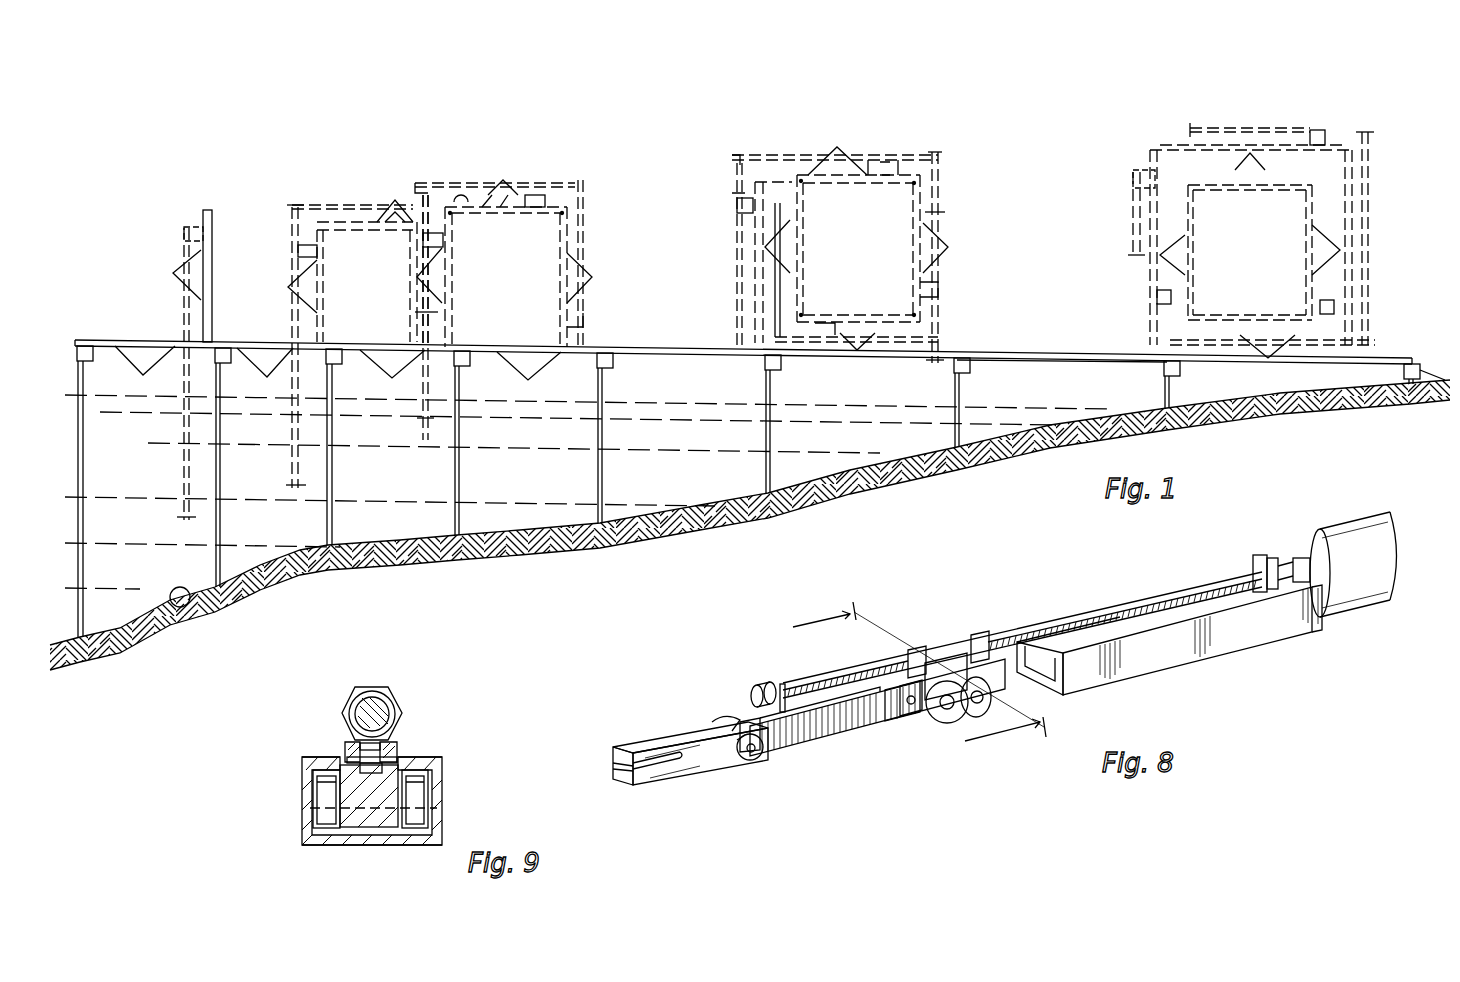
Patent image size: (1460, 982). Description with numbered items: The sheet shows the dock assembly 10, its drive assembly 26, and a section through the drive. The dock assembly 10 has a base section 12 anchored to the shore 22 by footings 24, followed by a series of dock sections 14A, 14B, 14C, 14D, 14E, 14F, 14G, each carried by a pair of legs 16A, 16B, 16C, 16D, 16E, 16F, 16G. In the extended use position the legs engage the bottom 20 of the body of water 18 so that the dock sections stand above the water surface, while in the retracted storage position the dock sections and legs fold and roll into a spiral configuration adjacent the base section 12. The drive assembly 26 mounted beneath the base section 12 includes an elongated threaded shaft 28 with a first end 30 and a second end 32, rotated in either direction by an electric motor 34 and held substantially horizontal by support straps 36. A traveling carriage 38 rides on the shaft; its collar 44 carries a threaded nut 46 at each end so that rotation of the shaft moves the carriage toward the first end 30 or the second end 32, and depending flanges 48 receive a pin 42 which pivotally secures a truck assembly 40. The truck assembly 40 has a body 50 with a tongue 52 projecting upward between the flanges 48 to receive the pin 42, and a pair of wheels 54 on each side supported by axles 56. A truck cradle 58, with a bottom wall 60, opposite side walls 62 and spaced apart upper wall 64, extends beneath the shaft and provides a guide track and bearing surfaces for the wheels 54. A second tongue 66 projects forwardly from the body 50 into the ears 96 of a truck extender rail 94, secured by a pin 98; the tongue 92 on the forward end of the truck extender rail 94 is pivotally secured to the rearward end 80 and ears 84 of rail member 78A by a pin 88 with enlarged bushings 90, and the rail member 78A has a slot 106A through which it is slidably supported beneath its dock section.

In FIG. 1, the dock assembly 10 is at (992, 218).
In FIG. 1, the base section 12 is at (1390, 362).
In FIG. 1, the dock section 14A is at (1155, 332).
In FIG. 1, the dock section 14B is at (1285, 150).
In FIG. 1, the dock section 14C is at (640, 355).
In FIG. 1, the dock section 14D is at (912, 165).
In FIG. 1, the dock section 14E is at (425, 332).
In FIG. 1, the dock section 14F is at (500, 208).
In FIG. 1, the dock section 14G is at (392, 208).
In FIG. 1, the legs 16A is at (962, 375).
In FIG. 1, the legs 16B is at (772, 440).
In FIG. 1, the legs 16C is at (604, 470).
In FIG. 1, the legs 16D is at (460, 470).
In FIG. 1, the legs 16E is at (425, 460).
In FIG. 1, the legs 16F is at (296, 470).
In FIG. 1, the legs 16G is at (182, 470).
In FIG. 1, the body of water 18 is at (150, 583).
In FIG. 1, the bottom 20 is at (210, 605).
In FIG. 1, the shore 22 is at (1418, 392).
In FIG. 1, the footings 24 is at (1165, 378).
In FIG. 8, the drive assembly 26 is at (962, 578).
In FIG. 9, the threaded shaft 28 is at (390, 712).
In FIG. 8, the threaded shaft 28 is at (1100, 602).
In FIG. 8, the first end 30 is at (1245, 578).
In FIG. 8, the second end 32 is at (790, 680).
In FIG. 8, the electric motor 34 is at (1375, 548).
In FIG. 8, the support straps 36 is at (757, 685).
In FIG. 9, the traveling carriage 38 is at (352, 678).
In FIG. 8, the traveling carriage 38 is at (932, 618).
In FIG. 9, the truck assembly 40 is at (440, 770).
In FIG. 8, the truck assembly 40 is at (940, 722).
In FIG. 9, the pin 42 is at (400, 755).
In FIG. 9, the collar 44 is at (370, 690).
In FIG. 8, the collar 44 is at (960, 655).
In FIG. 9, the threaded nut 46 is at (390, 698).
In FIG. 8, the threaded nut 46 is at (955, 628).
In FIG. 9, the depending flanges 48 is at (402, 745).
In FIG. 9, the body 50 is at (400, 840).
In FIG. 9, the tongue 52 is at (398, 765).
In FIG. 9, the wheels 54 is at (428, 822).
In FIG. 8, the wheels 54 is at (968, 713).
In FIG. 8, the axles 56 is at (1000, 700).
In FIG. 9, the truck cradle 58 is at (418, 800).
In FIG. 8, the truck cradle 58 is at (1184, 690).
In FIG. 9, the bottom wall 60 is at (335, 848).
In FIG. 8, the bottom wall 60 is at (1062, 702).
In FIG. 9, the side walls 62 is at (430, 795).
In FIG. 8, the side walls 62 is at (1228, 648).
In FIG. 9, the upper wall 64 is at (320, 760).
In FIG. 8, the upper wall 64 is at (1160, 610).
In FIG. 8, the second tongue 66 is at (880, 668).
In FIG. 8, the rail member 78A is at (650, 722).
In FIG. 8, the rearward end 80 is at (672, 722).
In FIG. 8, the ears 84 is at (728, 726).
In FIG. 8, the pin 88 is at (755, 760).
In FIG. 8, the bushings 90 is at (740, 758).
In FIG. 8, the tongue 92 is at (800, 752).
In FIG. 8, the truck extender rail 94 is at (830, 740).
In FIG. 8, the ears 96 is at (885, 720).
In FIG. 8, the pin 98 is at (910, 722).
In FIG. 8, the slot 106A is at (660, 770).